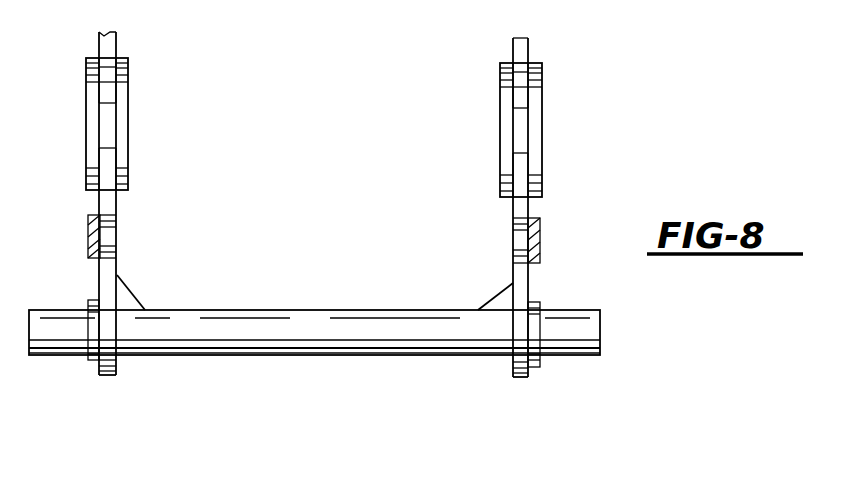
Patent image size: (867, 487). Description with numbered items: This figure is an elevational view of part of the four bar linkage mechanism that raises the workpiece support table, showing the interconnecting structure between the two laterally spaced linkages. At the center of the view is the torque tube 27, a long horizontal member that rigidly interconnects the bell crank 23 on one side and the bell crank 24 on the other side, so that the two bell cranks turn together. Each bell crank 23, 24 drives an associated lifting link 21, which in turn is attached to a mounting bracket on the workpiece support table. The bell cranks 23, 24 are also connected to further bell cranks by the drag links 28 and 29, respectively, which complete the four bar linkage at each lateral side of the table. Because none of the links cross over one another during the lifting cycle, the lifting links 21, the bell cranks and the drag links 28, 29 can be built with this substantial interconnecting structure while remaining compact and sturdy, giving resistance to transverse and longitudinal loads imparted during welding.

The lifting link 21 is at (120, 118).
The bell crank 23 is at (513, 270).
The bell crank 24 is at (120, 273).
The torque tube 27 is at (297, 320).
The drag link 28 is at (540, 237).
The drag link 29 is at (90, 237).